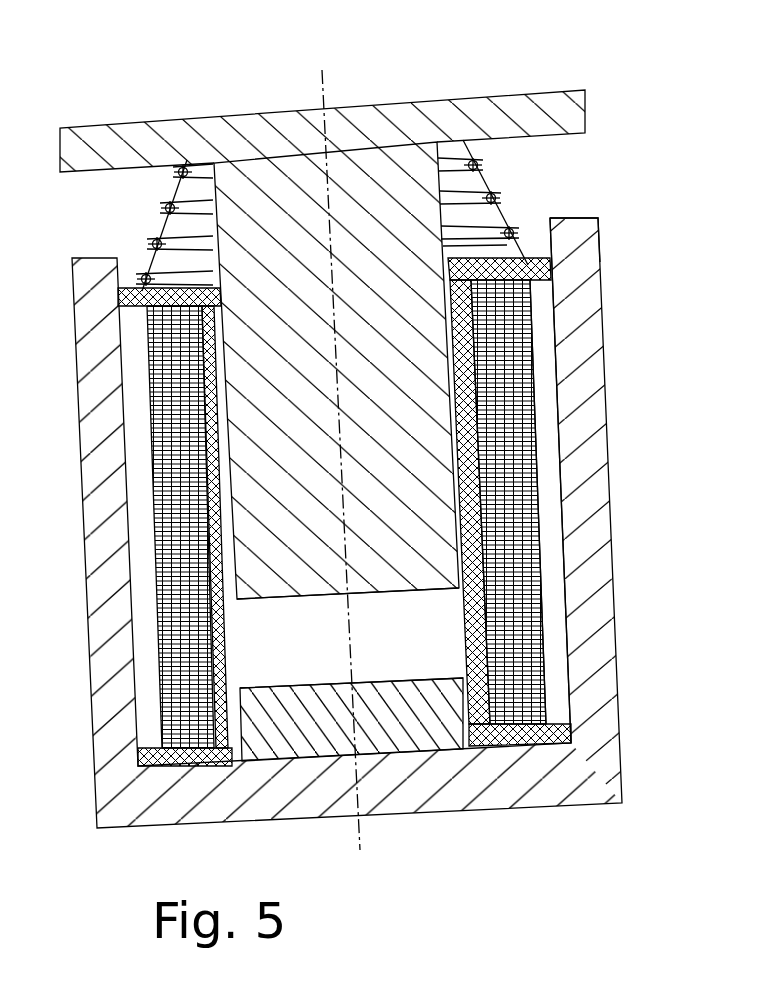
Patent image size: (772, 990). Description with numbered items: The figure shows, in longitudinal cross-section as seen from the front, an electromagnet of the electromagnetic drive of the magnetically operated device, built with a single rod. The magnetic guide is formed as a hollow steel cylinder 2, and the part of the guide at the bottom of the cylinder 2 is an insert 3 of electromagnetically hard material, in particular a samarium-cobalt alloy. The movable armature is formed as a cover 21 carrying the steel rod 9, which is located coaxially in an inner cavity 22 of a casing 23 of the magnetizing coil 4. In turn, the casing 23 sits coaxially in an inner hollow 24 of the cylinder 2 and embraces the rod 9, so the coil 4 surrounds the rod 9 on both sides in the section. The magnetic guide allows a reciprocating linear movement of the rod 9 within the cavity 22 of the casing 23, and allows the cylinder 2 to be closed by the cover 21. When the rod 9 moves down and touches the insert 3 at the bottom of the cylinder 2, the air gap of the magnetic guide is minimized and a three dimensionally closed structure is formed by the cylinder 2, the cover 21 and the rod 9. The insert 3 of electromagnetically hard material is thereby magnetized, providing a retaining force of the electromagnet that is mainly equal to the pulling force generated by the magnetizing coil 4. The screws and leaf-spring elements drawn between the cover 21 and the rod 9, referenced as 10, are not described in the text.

The cylinder 2 is at (583, 342).
The insert 3 is at (430, 718).
The magnetizing coil 4 is at (507, 512).
The steel rod 9 is at (267, 474).
The leaf springs with screws 10 is at (477, 163).
The cover 21 is at (567, 90).
The inner cavity 22 is at (443, 635).
The casing 23 is at (596, 241).
The inner hollow 24 is at (553, 440).